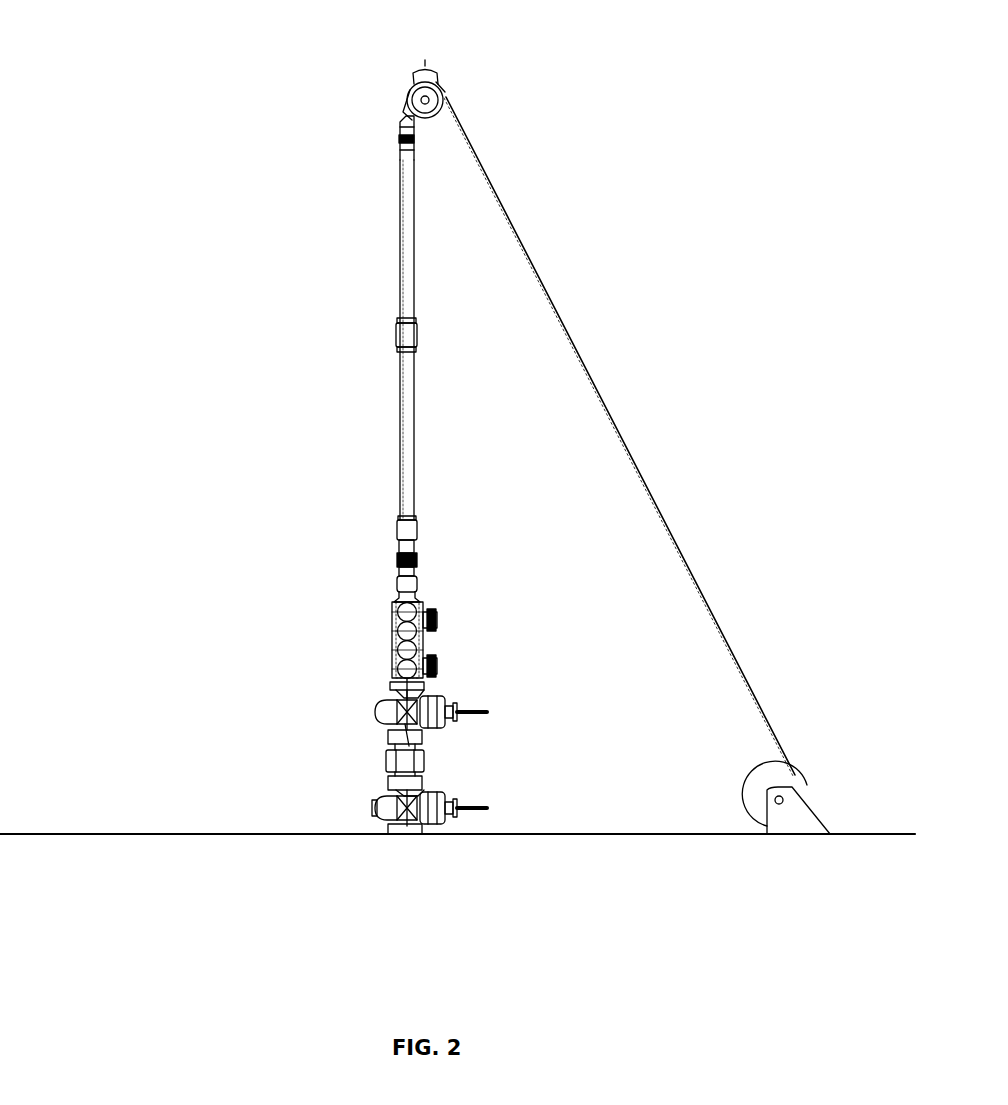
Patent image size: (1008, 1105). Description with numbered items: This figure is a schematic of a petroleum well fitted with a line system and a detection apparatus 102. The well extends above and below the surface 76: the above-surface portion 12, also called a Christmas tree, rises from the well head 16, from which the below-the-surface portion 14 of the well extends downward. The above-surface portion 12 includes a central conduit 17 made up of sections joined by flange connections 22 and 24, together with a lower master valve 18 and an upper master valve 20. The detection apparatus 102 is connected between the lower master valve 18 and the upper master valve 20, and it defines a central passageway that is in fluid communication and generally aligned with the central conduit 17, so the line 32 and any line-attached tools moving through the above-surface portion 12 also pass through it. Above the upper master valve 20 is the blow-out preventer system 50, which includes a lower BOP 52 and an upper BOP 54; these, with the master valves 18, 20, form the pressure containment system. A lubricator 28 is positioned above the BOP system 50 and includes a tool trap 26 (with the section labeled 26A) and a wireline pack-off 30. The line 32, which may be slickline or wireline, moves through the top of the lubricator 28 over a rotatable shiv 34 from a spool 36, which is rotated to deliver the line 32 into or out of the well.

The above-surface portion 12 is at (196, 617).
The below-the-surface portion 14 is at (314, 893).
The well head 16 is at (470, 830).
The central conduit 17 is at (385, 793).
The lower master valve 18 is at (367, 812).
The upper master valve 20 is at (372, 712).
The flange connection 22 is at (424, 784).
The flange connection 24 is at (428, 686).
The tool trap 26 is at (397, 579).
The coupling section 26A is at (397, 522).
The lubricator 28 is at (402, 377).
The wireline pack-off 30 is at (395, 133).
The line 32 is at (404, 108).
The rotatable shiv 34 is at (442, 73).
The spool 36 is at (800, 773).
The blow-out preventer system 50 is at (388, 602).
The lower BOP 52 is at (438, 664).
The upper BOP 54 is at (433, 610).
The surface 76 is at (133, 832).
The detection apparatus 102 is at (433, 758).